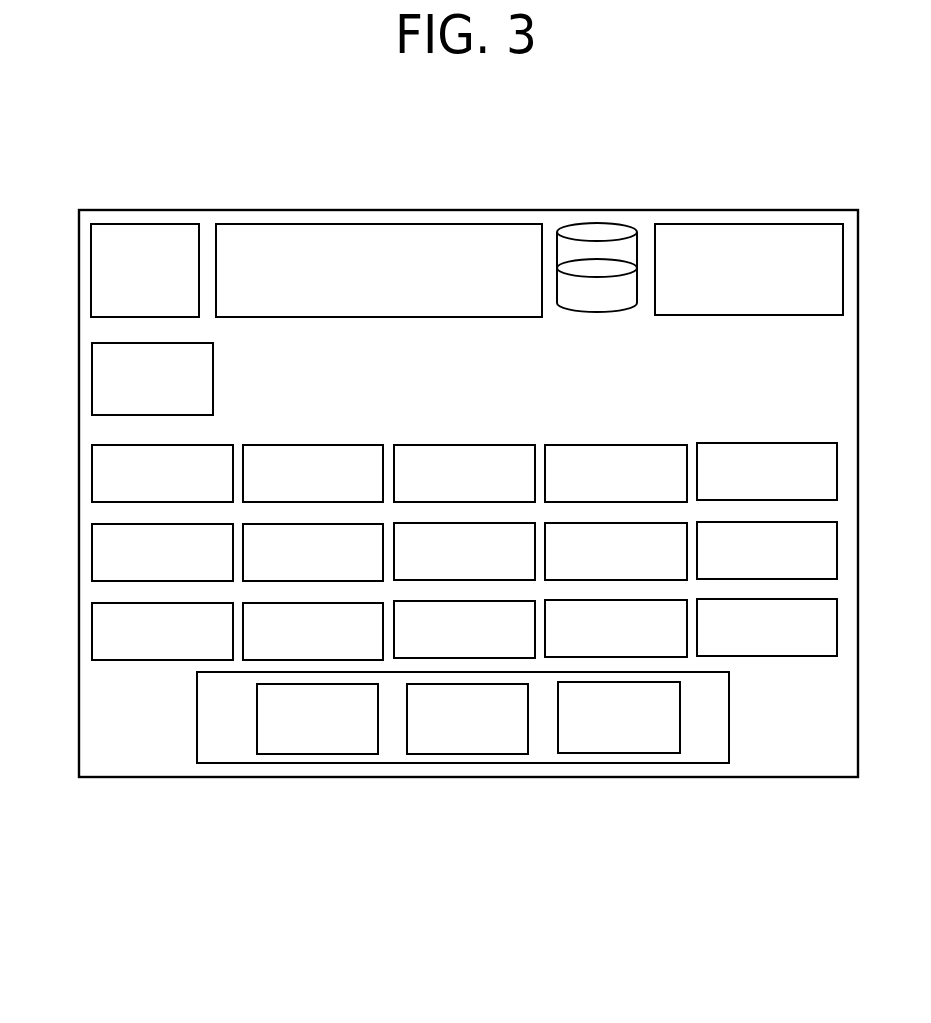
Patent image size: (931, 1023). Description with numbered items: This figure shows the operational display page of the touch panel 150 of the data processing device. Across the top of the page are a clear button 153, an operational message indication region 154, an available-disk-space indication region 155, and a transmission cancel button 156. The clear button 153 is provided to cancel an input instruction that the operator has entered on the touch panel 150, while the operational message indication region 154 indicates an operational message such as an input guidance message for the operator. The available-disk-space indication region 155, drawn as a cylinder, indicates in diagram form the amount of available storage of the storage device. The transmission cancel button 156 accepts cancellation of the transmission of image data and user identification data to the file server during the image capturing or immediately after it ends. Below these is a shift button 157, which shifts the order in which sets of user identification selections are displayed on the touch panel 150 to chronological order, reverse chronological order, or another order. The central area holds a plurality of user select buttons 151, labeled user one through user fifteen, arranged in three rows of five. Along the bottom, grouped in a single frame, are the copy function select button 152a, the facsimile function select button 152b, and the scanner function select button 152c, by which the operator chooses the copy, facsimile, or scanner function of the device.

The touch panel 150 is at (793, 777).
The user select buttons 151 is at (127, 677).
The copy function select button 152a is at (312, 748).
The facsimile function select button 152b is at (467, 747).
The scanner function select button 152c is at (617, 747).
The clear button 153 is at (149, 232).
The operational message indication region 154 is at (335, 235).
The available-disk-space indication region 155 is at (598, 229).
The transmission cancel button 156 is at (746, 229).
The shift button 157 is at (205, 375).